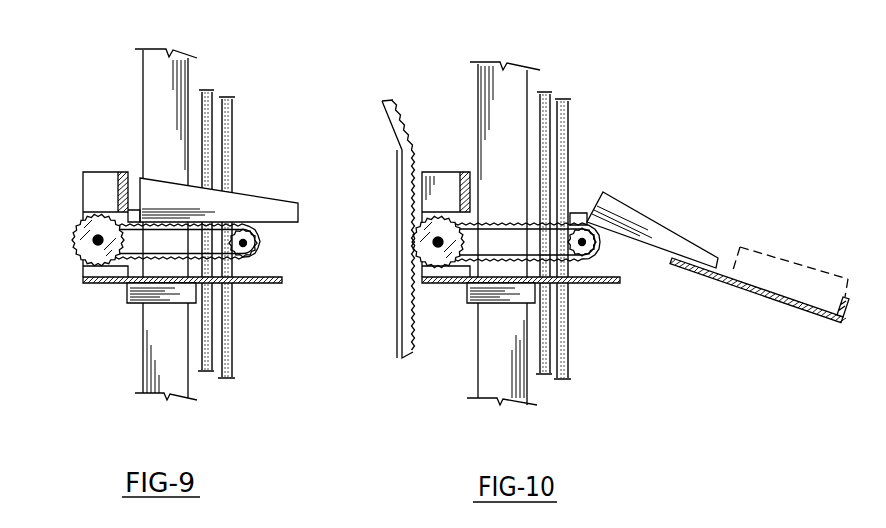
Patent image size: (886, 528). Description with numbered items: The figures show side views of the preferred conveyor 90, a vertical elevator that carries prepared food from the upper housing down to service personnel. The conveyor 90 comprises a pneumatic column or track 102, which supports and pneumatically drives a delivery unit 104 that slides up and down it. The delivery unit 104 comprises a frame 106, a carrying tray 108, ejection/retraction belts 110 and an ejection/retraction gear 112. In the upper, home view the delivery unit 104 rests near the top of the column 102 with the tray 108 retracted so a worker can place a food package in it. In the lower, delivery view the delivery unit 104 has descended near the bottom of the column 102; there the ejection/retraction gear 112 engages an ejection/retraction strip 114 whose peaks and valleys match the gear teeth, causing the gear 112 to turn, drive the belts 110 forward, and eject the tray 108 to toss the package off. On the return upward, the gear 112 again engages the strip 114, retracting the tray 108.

In FIG. 9, the conveyor 90 is at (247, 104).
In FIG. 10, the conveyor 90 is at (615, 108).
In FIG. 9, the pneumatic column 102 is at (143, 128).
In FIG. 10, the pneumatic column 102 is at (515, 85).
In FIG. 9, the delivery unit 104 is at (73, 291).
In FIG. 10, the delivery unit 104 is at (672, 298).
In FIG. 9, the frame 106 is at (85, 193).
In FIG. 10, the frame 106 is at (448, 170).
In FIG. 9, the carrying tray 108 is at (283, 216).
In FIG. 10, the carrying tray 108 is at (670, 228).
In FIG. 9, the ejection/retraction belts 110 is at (253, 255).
In FIG. 10, the ejection/retraction belts 110 is at (595, 263).
In FIG. 9, the ejection/retraction gear 112 is at (112, 258).
In FIG. 10, the ejection/retraction gear 112 is at (452, 252).
In FIG. 10, the ejection/retraction strip 114 is at (400, 358).